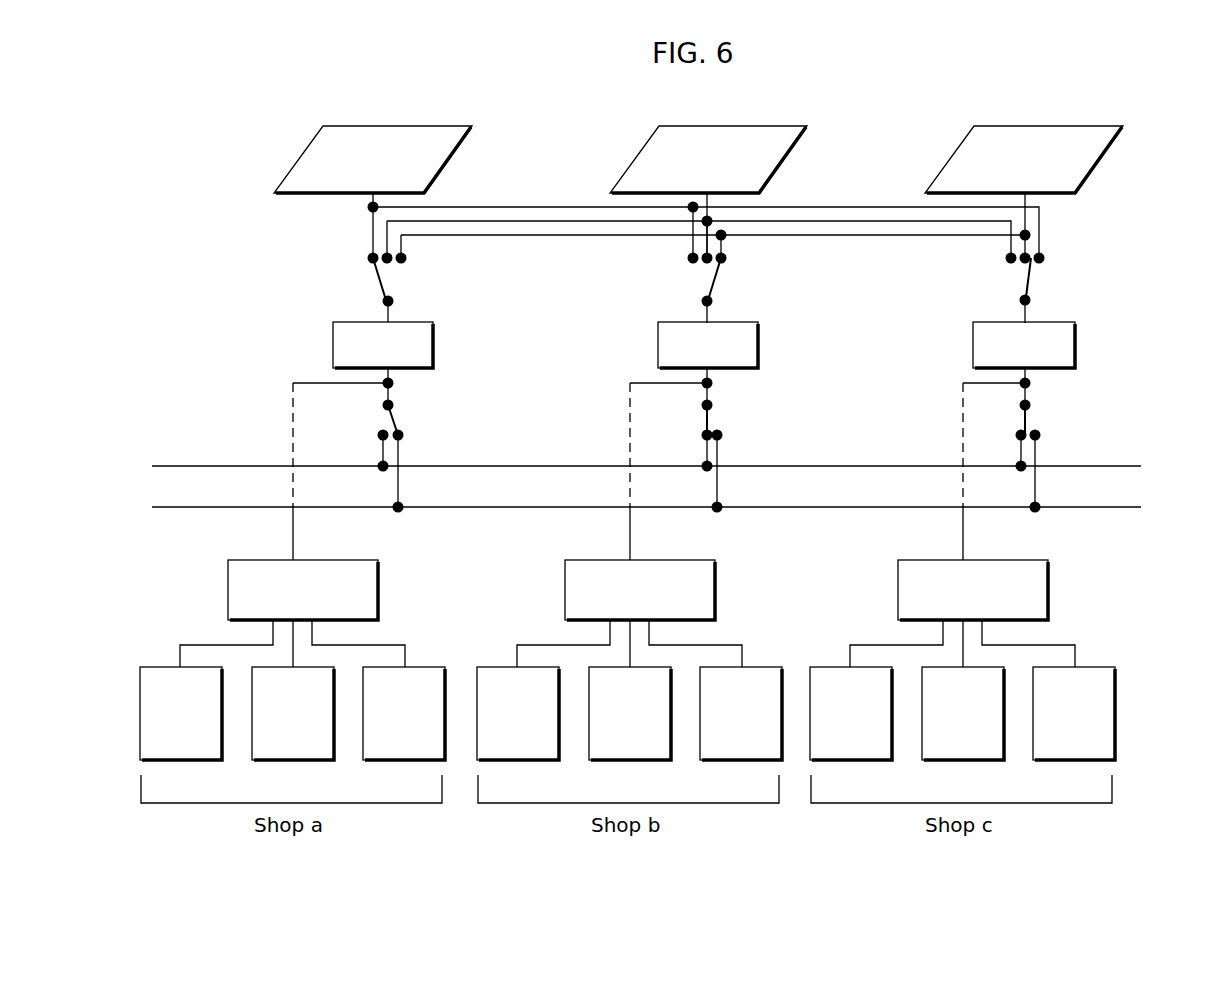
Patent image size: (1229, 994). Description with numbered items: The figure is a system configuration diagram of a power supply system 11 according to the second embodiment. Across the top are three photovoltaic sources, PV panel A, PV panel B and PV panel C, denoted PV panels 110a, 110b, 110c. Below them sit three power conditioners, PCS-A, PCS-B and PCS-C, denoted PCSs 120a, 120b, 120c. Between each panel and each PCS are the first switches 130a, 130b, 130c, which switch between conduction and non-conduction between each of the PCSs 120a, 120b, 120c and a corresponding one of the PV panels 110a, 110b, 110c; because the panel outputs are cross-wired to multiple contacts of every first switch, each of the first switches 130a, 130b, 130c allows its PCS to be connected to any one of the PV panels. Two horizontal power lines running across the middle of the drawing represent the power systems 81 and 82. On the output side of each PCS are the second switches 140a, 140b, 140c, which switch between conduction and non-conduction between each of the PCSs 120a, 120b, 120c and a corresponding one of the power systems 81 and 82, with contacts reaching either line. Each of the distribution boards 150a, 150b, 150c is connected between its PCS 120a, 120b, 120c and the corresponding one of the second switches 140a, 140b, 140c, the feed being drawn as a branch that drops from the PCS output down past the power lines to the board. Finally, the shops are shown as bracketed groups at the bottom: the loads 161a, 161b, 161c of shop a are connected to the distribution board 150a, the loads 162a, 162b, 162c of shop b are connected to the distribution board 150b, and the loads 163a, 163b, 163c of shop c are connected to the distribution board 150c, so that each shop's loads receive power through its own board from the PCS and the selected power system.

The power supply system 11 is at (1000, 105).
The PV panel 110a is at (448, 165).
The PV panel 110b is at (783, 165).
The PV panel 110c is at (1100, 165).
The first switch 130a is at (388, 290).
The first switch 130b is at (717, 290).
The first switch 130c is at (1030, 290).
The PCS 120a is at (433, 340).
The PCS 120b is at (758, 340).
The PCS 120c is at (1075, 340).
The second switch 140a is at (395, 420).
The second switch 140b is at (707, 418).
The second switch 140c is at (1025, 418).
The power system 81 is at (197, 466).
The power system 82 is at (197, 507).
The distribution board 150a is at (378, 585).
The distribution board 150b is at (715, 585).
The distribution board 150c is at (1048, 585).
The load 161a is at (155, 760).
The load 161b is at (267, 760).
The load 161c is at (378, 760).
The load 162a is at (492, 760).
The load 162b is at (604, 760).
The load 162c is at (715, 760).
The load 163a is at (825, 760).
The load 163b is at (937, 760).
The load 163c is at (1048, 760).